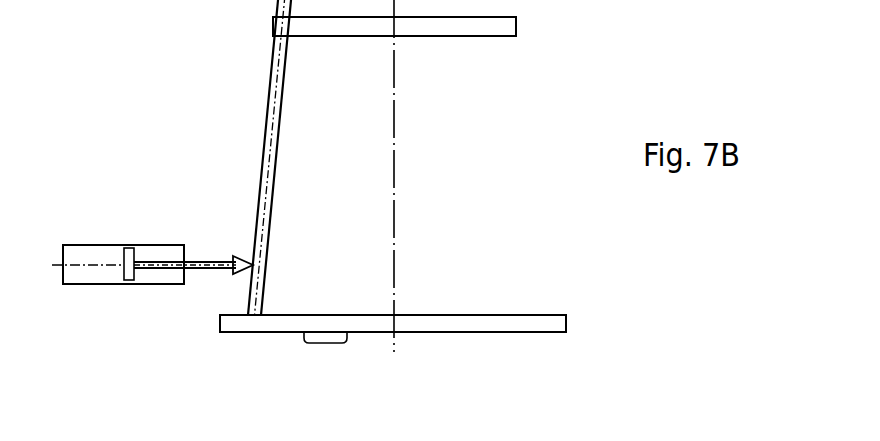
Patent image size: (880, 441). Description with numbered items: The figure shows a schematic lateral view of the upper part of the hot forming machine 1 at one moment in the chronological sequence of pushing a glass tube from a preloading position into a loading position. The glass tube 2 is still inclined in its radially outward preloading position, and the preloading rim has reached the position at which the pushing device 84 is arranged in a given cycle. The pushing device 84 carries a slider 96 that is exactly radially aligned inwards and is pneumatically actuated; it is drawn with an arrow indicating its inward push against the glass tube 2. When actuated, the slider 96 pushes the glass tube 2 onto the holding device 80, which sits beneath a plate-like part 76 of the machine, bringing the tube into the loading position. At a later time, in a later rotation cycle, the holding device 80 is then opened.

The hot forming machine 1 is at (530, 120).
The glass tube 2 is at (264, 113).
The base plate 76 is at (524, 314).
The holding device 80 is at (310, 345).
The pushing device 84 is at (102, 285).
The slider 96 is at (210, 268).